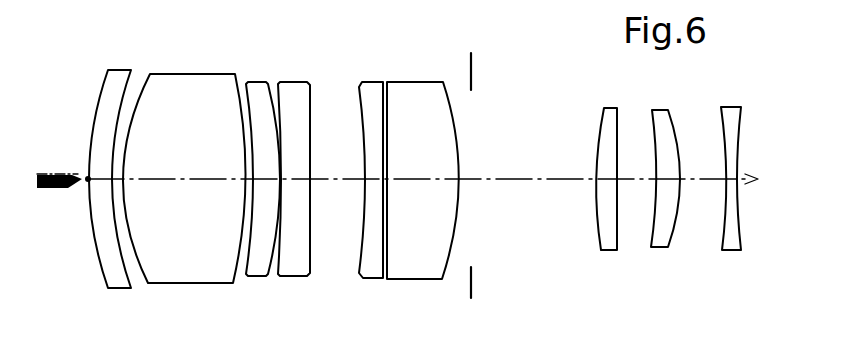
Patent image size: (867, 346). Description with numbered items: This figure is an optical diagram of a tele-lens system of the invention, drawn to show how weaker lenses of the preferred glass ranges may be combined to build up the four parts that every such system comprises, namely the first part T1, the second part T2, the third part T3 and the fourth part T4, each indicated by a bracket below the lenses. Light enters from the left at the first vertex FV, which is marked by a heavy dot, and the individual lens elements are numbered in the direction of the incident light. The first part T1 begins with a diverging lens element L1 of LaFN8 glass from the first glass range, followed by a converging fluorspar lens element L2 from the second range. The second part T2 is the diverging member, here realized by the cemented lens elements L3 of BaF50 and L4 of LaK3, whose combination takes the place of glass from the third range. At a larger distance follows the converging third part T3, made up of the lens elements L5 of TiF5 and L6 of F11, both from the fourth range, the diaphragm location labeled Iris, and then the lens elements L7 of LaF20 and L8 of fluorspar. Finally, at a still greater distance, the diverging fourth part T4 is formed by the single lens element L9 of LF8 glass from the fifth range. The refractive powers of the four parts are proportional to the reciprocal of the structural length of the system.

The first lens element L1 is at (105, 102).
The second lens element L2 is at (232, 298).
The third lens element L3 is at (258, 97).
The fourth lens element L4 is at (294, 153).
The fifth lens element L5 is at (372, 93).
The sixth lens element L6 is at (418, 98).
The seventh lens element L7 is at (605, 120).
The eighth lens element L8 is at (651, 156).
The ninth lens element L9 is at (713, 158).
The first vertex FV is at (85, 178).
The diaphragm location Iris is at (471, 296).
The first part T1 is at (161, 188).
The second part T2 is at (271, 188).
The third part T3 is at (519, 188).
The fourth part T4 is at (713, 197).